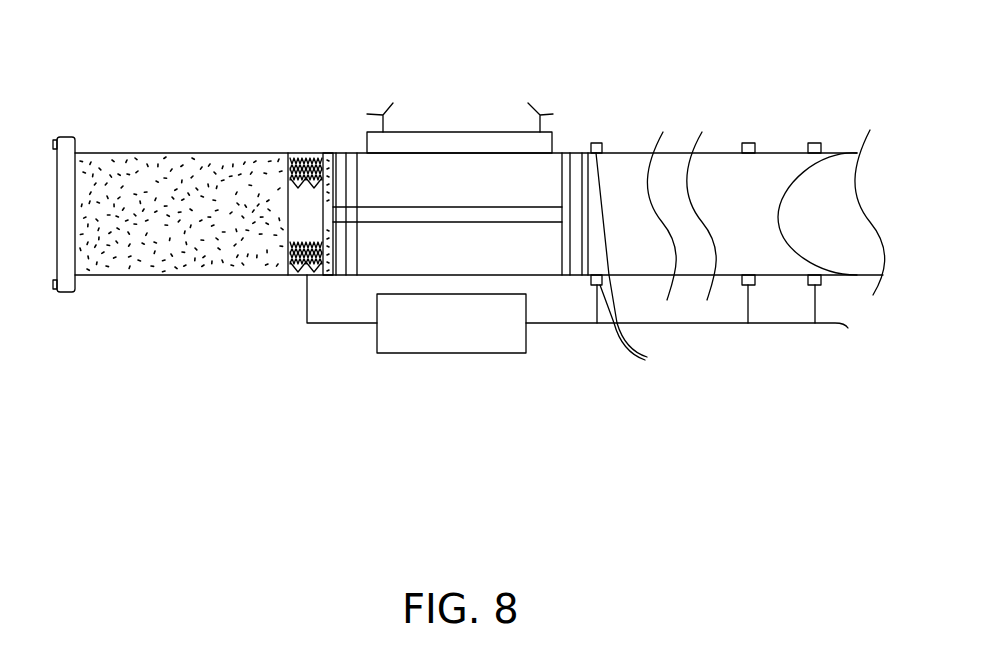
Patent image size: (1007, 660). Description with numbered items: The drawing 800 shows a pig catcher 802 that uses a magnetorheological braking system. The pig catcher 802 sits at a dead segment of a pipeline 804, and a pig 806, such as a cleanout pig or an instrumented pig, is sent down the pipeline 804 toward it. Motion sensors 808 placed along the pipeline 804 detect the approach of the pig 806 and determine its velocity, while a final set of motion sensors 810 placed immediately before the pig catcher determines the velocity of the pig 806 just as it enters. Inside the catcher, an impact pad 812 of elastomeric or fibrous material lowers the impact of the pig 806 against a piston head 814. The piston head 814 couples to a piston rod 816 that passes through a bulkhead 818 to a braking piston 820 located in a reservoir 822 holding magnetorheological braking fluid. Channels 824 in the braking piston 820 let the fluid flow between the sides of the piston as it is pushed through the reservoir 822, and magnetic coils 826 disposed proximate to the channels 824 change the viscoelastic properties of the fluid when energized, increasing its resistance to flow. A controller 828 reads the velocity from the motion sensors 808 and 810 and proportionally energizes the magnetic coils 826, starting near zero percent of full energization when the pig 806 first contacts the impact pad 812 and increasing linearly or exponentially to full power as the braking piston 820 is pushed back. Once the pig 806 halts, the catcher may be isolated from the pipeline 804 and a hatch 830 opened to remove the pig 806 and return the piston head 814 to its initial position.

The drawing 800 is at (482, 578).
The pig catcher 802 is at (583, 90).
The pipeline 804 is at (642, 152).
The pig 806 is at (837, 212).
The motion sensors 808 is at (813, 143).
The final set of motion sensors 810 is at (643, 258).
The impact pad 812 is at (580, 153).
The piston head 814 is at (570, 153).
The piston rod 816 is at (442, 222).
The bulkhead 818 is at (357, 175).
The braking piston 820 is at (298, 215).
The reservoir 822 is at (185, 245).
The channels 824 is at (292, 153).
The magnetic coils 826 is at (307, 153).
The controller 828 is at (425, 355).
The hatch 830 is at (447, 132).